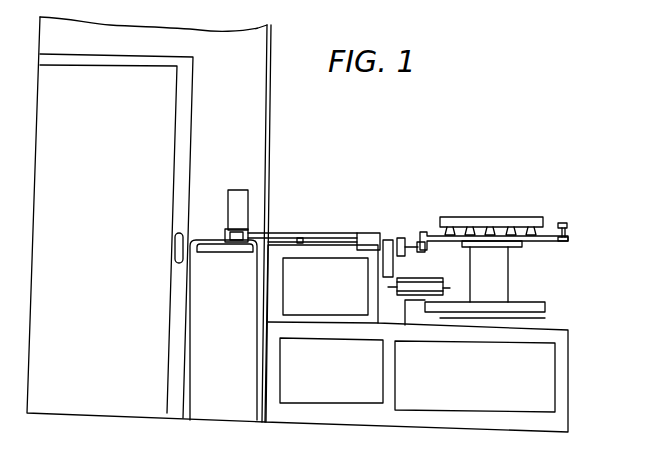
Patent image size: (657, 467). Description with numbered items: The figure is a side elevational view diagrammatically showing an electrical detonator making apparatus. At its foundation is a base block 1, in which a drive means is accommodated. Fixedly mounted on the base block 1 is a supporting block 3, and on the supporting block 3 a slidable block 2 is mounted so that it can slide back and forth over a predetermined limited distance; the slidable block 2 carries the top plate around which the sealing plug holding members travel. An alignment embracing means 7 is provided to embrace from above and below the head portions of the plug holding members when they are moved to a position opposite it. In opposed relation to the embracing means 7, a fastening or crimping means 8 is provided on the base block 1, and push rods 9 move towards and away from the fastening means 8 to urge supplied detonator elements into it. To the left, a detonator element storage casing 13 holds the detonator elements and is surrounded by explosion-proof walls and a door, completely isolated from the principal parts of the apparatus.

The base block 1 is at (556, 338).
The slidable block 2 is at (500, 267).
The supporting block 3 is at (548, 312).
The alignment embracing means 7 is at (402, 236).
The fastening means 8 is at (368, 233).
The push rods 9 is at (315, 242).
The detonator element storage casing 13 is at (238, 190).